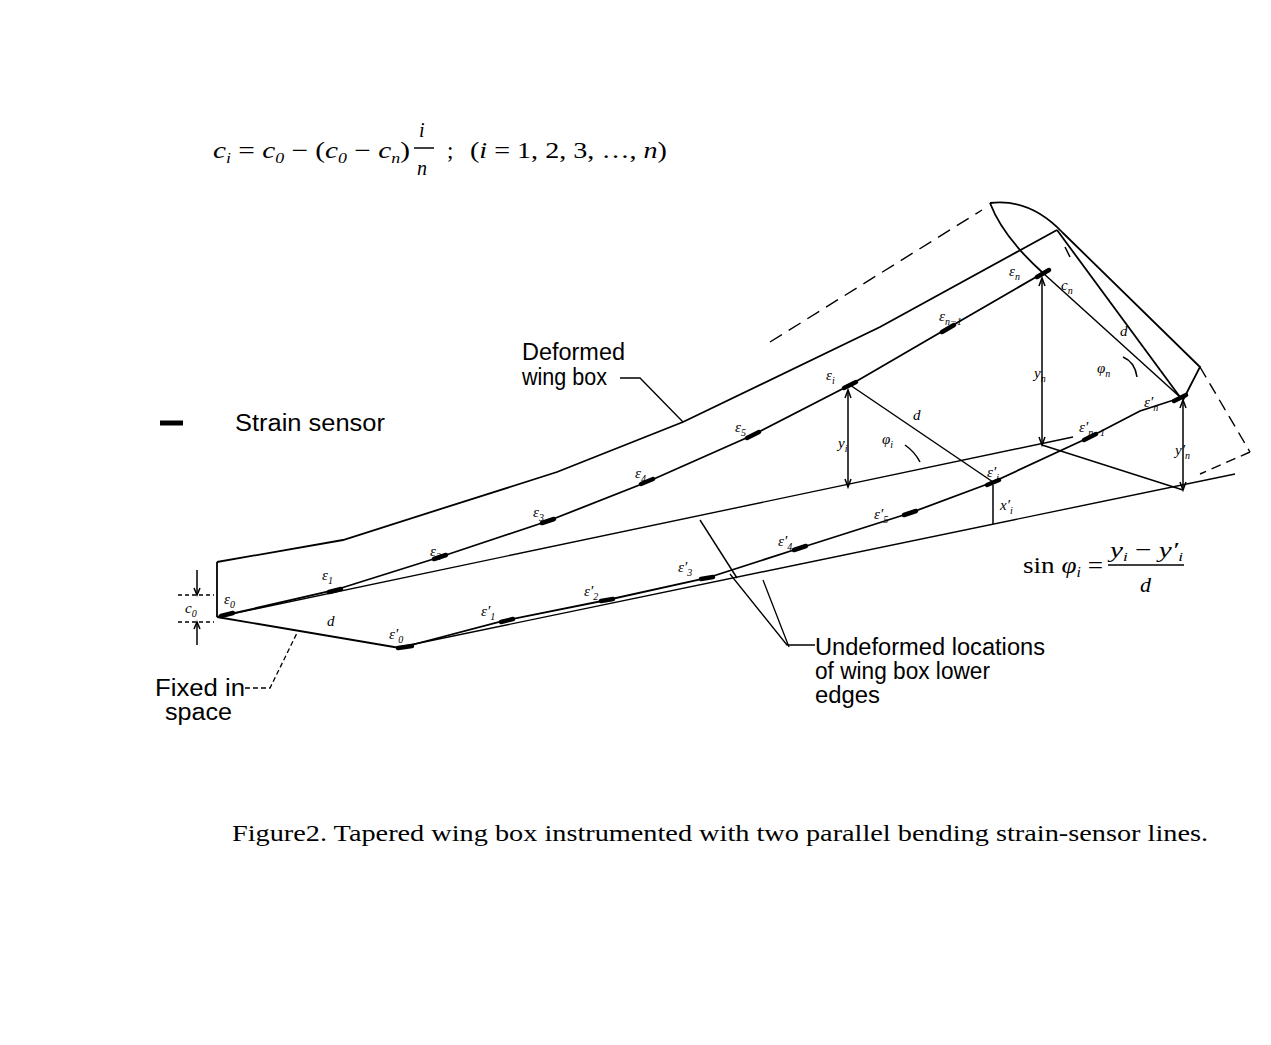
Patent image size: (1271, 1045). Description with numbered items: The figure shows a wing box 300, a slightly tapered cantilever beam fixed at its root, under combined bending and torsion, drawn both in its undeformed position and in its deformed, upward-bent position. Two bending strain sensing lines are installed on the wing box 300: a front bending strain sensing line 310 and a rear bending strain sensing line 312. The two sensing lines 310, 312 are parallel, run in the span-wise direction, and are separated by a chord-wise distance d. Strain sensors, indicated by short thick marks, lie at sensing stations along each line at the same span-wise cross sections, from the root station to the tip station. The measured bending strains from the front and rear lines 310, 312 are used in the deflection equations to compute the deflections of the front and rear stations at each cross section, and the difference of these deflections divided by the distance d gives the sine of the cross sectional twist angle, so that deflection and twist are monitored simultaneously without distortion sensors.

The tapered wing box 300 is at (708, 425).
The front bending strain sensing line 310 is at (600, 505).
The rear bending strain sensing line 312 is at (648, 598).